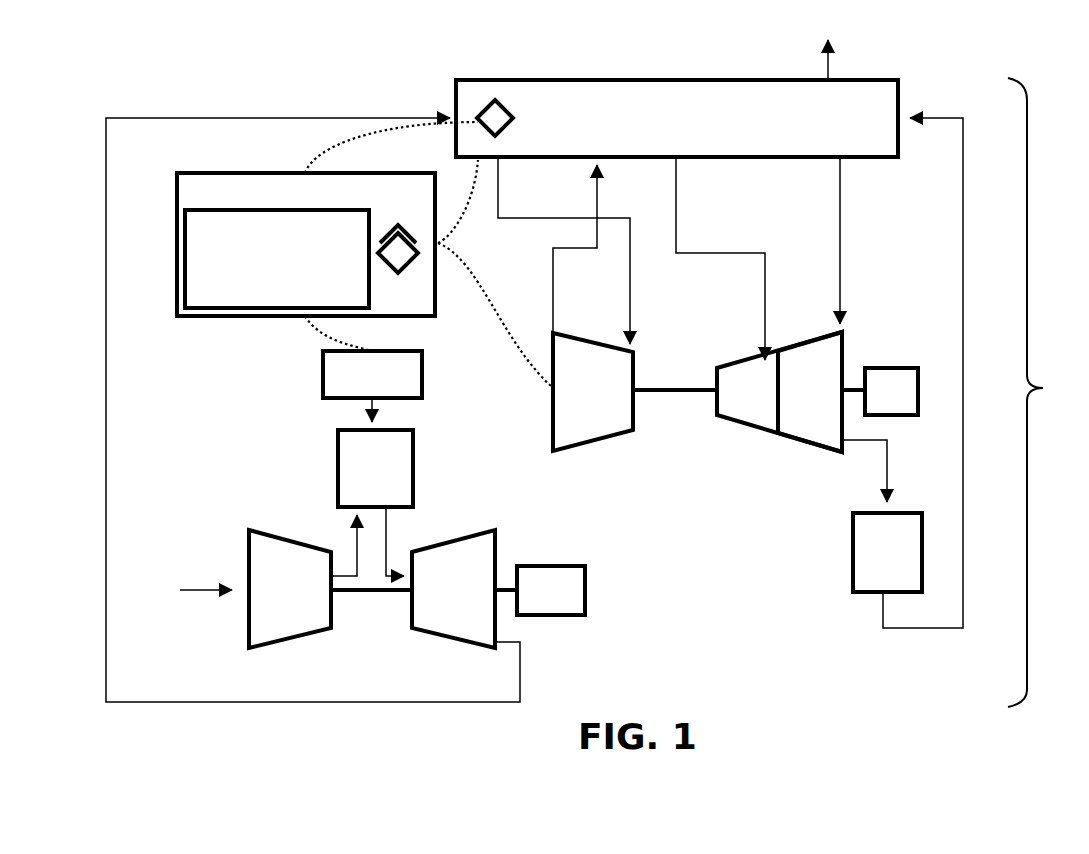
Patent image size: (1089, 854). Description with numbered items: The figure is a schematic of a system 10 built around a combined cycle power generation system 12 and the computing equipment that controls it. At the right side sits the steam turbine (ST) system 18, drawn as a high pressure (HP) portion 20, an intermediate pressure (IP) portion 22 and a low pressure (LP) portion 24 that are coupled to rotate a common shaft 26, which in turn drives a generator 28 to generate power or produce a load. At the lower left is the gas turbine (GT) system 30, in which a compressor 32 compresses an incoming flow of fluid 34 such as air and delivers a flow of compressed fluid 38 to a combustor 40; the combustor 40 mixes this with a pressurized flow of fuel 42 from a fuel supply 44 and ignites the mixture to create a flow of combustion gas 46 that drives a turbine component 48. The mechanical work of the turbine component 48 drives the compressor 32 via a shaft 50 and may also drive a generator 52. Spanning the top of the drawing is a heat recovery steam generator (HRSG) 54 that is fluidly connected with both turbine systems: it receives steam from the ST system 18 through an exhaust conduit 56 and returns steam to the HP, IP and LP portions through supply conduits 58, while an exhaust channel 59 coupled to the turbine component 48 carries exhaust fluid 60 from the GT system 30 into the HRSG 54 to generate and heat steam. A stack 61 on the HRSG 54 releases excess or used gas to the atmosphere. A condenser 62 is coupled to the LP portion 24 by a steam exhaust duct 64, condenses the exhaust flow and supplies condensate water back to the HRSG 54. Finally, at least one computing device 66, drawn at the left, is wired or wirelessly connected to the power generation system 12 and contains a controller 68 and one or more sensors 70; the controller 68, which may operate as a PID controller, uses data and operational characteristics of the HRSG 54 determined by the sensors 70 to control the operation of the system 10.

The system 10 is at (292, 66).
The combined cycle power generation system 12 is at (1046, 392).
The steam turbine system 18 is at (700, 472).
The high pressure portion 20 is at (765, 401).
The intermediate pressure portion 22 is at (826, 401).
The low pressure portion 24 is at (608, 401).
The shaft 26 is at (664, 393).
The generator 28 is at (904, 401).
The gas turbine system 30 is at (610, 587).
The compressor 32 is at (304, 607).
The flow of fluid 34 is at (196, 590).
The flow of compressed fluid 38 is at (348, 592).
The combustor 40 is at (388, 477).
The pressurized flow of fuel 42 is at (374, 427).
The fuel supply 44 is at (385, 385).
The flow of combustion gas 46 is at (392, 592).
The turbine component 48 is at (467, 607).
The shaft 50 is at (358, 592).
The generator 52 is at (563, 566).
The heat recovery steam generator 54 is at (745, 130).
The exhaust conduit 56 is at (554, 310).
The supply conduits 58 is at (631, 316).
The exhaust channel 59 is at (313, 410).
The exhaust fluid 60 is at (106, 412).
The stack 61 is at (826, 62).
The condenser 62 is at (853, 562).
The steam exhaust duct 64 is at (885, 464).
The computing device 66 is at (410, 203).
The controller 68 is at (360, 243).
The sensors 70 is at (504, 108).